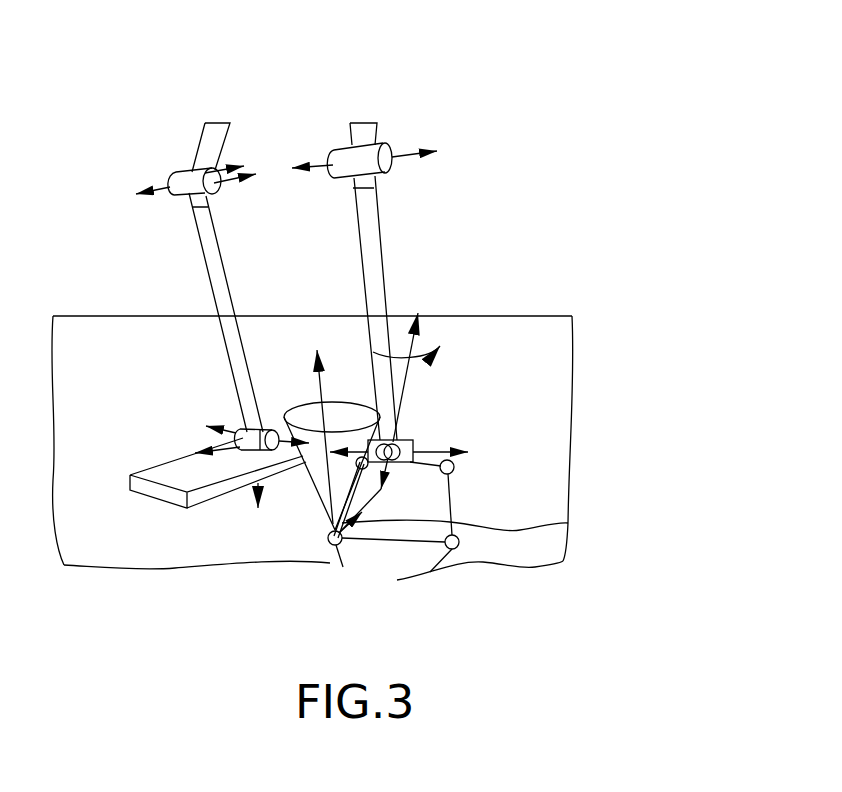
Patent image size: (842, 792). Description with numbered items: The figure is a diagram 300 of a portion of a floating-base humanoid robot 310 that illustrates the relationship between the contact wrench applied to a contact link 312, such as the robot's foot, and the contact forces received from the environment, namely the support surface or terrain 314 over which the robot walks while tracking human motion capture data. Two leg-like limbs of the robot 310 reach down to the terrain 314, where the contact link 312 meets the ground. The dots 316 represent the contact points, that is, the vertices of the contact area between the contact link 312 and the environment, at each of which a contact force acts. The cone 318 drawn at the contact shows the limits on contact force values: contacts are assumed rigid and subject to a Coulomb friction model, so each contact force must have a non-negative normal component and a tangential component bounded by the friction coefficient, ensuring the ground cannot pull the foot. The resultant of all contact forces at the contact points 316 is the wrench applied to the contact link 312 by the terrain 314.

The diagram 300 is at (628, 370).
The floating-base humanoid robot 310 is at (448, 90).
The contact link 312 is at (418, 532).
The support surface/terrain 314 is at (108, 542).
The contact points 316 is at (330, 563).
The cone 318 is at (318, 512).